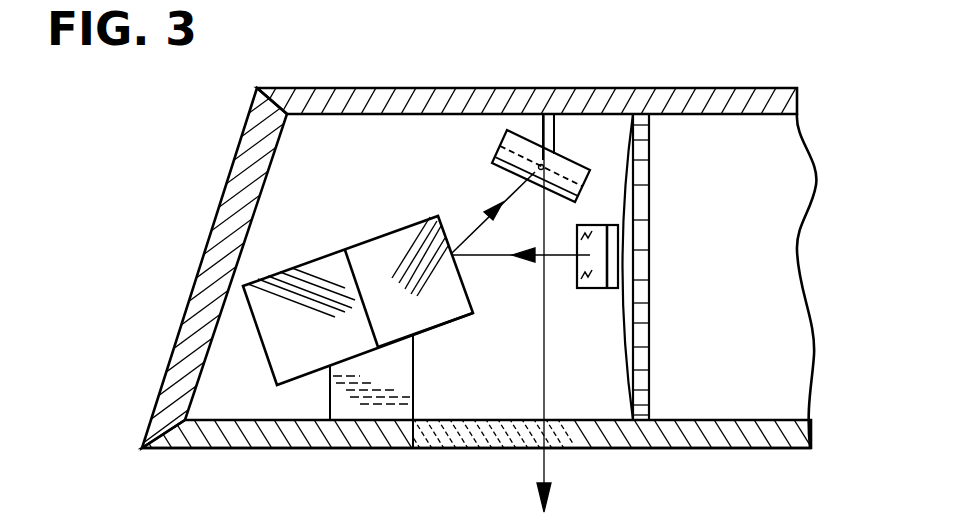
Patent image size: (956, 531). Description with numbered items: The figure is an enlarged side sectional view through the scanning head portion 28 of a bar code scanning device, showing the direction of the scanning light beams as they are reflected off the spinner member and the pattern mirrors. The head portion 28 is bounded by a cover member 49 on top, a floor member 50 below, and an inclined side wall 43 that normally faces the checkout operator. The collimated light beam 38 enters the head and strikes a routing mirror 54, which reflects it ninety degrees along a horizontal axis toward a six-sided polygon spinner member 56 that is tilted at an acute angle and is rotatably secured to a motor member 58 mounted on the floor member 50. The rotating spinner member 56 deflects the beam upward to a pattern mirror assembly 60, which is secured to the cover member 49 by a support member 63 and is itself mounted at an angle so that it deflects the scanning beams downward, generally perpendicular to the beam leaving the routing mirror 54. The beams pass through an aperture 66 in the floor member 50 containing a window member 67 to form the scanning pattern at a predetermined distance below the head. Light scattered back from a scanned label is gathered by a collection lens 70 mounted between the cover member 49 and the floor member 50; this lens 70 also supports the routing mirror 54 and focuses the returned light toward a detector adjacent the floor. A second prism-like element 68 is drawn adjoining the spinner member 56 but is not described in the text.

The scanning head portion 28 is at (464, 269).
The cover member 49 is at (402, 88).
The side wall 43 is at (211, 252).
The floor member 50 is at (705, 420).
The window member 67 is at (474, 420).
The aperture 66 is at (415, 437).
The collection lens 70 is at (646, 206).
The routing mirror 54 is at (605, 265).
The scanning light beam 38 is at (545, 358).
The support member 63 is at (556, 126).
The pattern mirror assembly 60 is at (505, 134).
The polygon spinner member 56 is at (383, 293).
The second prism 68 is at (468, 322).
The motor member 58 is at (417, 383).